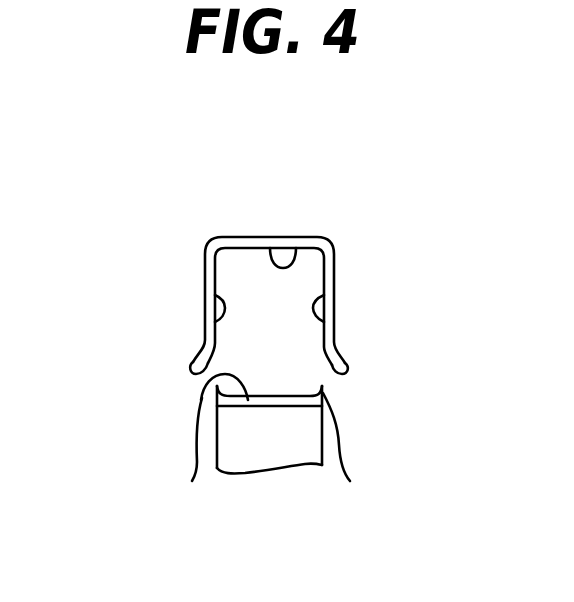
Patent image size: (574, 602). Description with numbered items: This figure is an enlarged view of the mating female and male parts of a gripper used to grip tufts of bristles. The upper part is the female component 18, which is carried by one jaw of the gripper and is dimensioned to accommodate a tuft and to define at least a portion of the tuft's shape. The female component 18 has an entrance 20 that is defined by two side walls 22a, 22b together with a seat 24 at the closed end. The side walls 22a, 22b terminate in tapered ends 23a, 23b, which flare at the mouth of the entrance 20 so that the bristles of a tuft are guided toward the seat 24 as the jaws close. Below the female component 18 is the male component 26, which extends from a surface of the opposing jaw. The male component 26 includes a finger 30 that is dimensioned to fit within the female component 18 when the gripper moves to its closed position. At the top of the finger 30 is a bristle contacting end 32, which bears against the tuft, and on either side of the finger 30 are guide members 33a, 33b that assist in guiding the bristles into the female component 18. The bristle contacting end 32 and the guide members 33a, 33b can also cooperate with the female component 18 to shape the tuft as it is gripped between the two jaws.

The female component 18 is at (253, 225).
The entrance 20 is at (283, 334).
The side wall 22a is at (326, 327).
The side wall 22b is at (213, 327).
The tapered end 23a is at (333, 375).
The tapered end 23b is at (207, 375).
The seat 24 is at (297, 263).
The male component 26 is at (231, 483).
The finger 30 is at (285, 445).
The bristle contacting end 32 is at (201, 400).
The guide member 33a is at (360, 453).
The guide member 33b is at (176, 454).